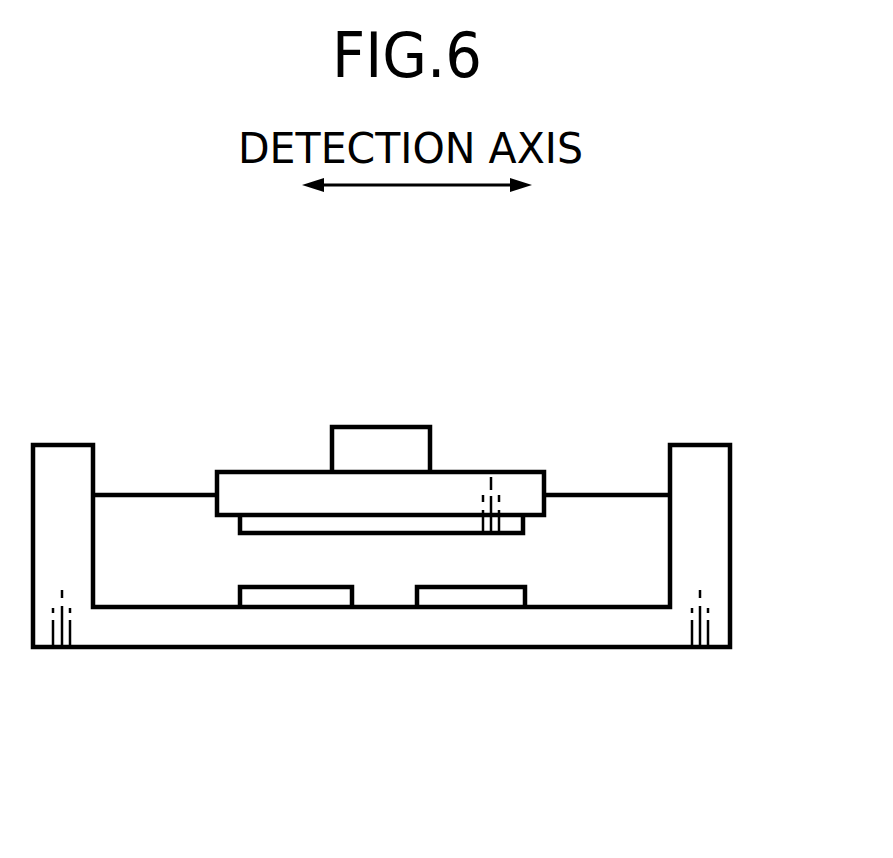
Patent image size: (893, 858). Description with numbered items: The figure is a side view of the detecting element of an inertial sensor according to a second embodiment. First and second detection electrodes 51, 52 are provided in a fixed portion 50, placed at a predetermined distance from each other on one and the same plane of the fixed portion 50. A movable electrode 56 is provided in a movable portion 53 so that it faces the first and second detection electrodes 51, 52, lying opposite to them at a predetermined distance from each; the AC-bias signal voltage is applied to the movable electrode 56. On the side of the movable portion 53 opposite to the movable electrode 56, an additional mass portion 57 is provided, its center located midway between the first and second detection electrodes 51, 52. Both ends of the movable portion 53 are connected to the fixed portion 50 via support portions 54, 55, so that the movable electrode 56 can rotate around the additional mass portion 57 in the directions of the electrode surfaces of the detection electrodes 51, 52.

The fixed portion 50 is at (658, 637).
The first detection electrode 51 is at (273, 600).
The second detection electrode 52 is at (495, 600).
The movable portion 53 is at (458, 485).
The support portion 54 is at (163, 490).
The support portion 55 is at (597, 495).
The movable electrode 56 is at (393, 527).
The additional mass portion 57 is at (362, 438).